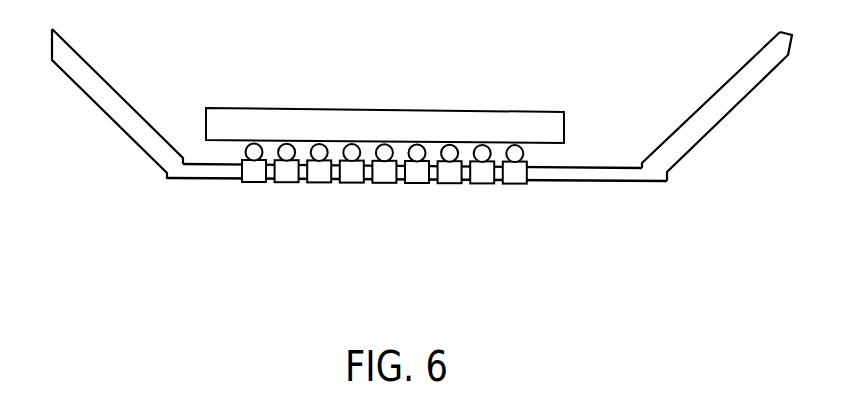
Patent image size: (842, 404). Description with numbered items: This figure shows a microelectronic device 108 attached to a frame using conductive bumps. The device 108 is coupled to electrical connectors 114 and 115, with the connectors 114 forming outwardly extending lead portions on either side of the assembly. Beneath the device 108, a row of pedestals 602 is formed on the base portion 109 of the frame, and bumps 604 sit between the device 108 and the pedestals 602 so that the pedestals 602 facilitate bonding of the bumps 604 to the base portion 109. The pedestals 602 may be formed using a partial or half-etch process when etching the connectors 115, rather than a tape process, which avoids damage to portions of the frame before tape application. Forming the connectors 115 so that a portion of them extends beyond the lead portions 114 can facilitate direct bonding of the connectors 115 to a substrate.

The device 108 is at (413, 110).
The base portion 109 is at (417, 198).
The electrical connectors 114 is at (140, 145).
The electrical connectors 115 is at (413, 203).
The pedestals 602 is at (517, 185).
The bumps 604 is at (522, 158).